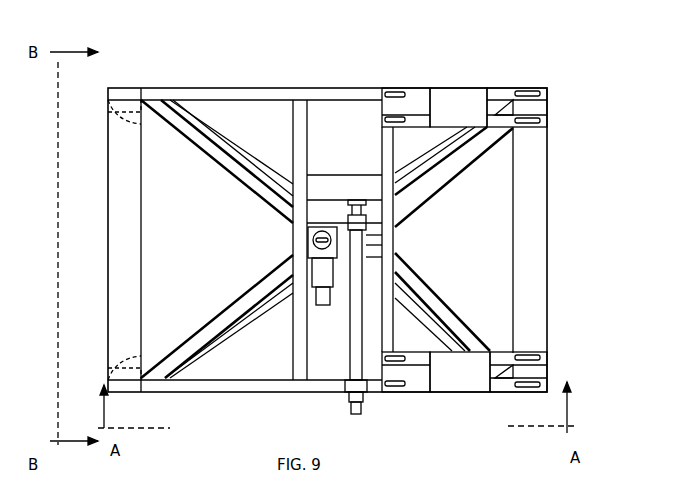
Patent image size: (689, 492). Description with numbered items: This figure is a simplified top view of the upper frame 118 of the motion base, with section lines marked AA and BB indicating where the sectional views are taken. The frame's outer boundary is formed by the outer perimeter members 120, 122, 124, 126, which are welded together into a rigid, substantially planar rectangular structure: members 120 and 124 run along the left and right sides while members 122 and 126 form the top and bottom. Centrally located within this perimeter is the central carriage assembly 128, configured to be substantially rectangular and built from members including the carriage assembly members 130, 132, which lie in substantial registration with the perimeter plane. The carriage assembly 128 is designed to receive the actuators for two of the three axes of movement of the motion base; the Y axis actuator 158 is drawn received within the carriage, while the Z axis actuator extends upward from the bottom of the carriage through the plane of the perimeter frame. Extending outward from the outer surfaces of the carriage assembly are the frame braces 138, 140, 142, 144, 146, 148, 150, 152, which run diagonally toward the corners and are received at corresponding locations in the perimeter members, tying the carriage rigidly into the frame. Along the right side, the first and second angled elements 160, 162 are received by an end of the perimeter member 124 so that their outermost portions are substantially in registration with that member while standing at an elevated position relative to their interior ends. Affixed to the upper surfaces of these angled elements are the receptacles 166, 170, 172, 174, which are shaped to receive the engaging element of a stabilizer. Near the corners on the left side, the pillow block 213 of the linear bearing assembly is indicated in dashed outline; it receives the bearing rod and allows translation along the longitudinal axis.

The upper frame 118 is at (588, 146).
The outer perimeter member 120 is at (108, 208).
The outer perimeter member 122 is at (243, 88).
The outer perimeter member 124 is at (545, 236).
The outer perimeter member 126 is at (245, 393).
The central carriage assembly 128 is at (285, 233).
The carriage assembly member 130 is at (293, 328).
The carriage assembly member 132 is at (395, 245).
The frame brace 138 is at (410, 172).
The frame brace 140 is at (452, 162).
The frame brace 142 is at (466, 316).
The frame brace 144 is at (428, 324).
The frame brace 146 is at (240, 330).
The frame brace 148 is at (218, 314).
The frame brace 150 is at (225, 162).
The frame brace 152 is at (262, 164).
The Y axis actuator 158 is at (350, 362).
The first angled element 160 is at (484, 88).
The second angled element 162 is at (455, 393).
The receptacle 166 is at (382, 90).
The receptacle 170 is at (534, 92).
The receptacle 172 is at (525, 356).
The receptacle 174 is at (388, 393).
The pillow block 213 is at (110, 120).